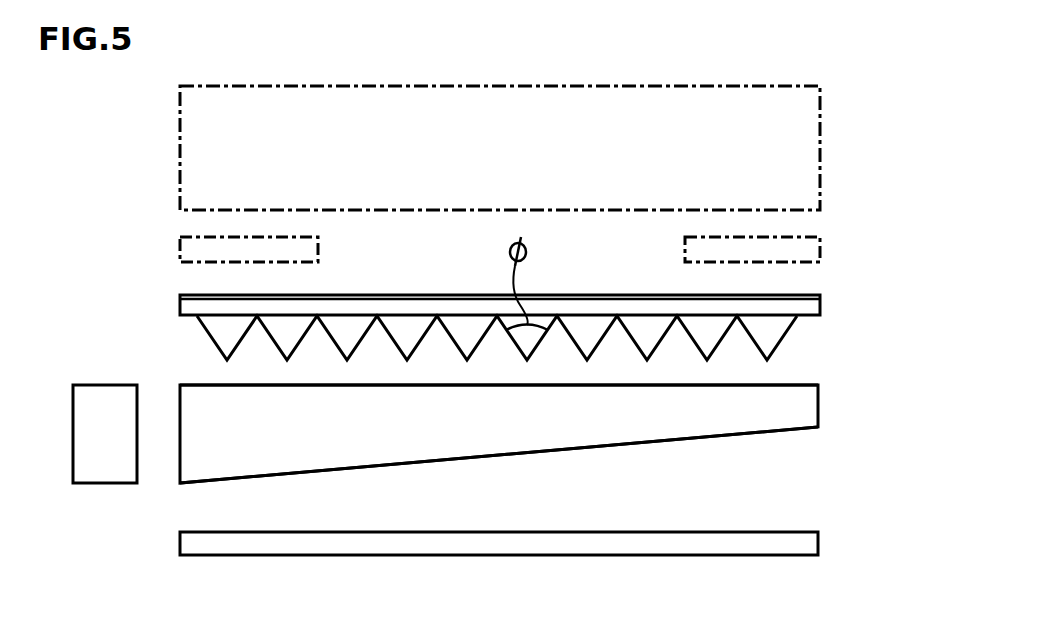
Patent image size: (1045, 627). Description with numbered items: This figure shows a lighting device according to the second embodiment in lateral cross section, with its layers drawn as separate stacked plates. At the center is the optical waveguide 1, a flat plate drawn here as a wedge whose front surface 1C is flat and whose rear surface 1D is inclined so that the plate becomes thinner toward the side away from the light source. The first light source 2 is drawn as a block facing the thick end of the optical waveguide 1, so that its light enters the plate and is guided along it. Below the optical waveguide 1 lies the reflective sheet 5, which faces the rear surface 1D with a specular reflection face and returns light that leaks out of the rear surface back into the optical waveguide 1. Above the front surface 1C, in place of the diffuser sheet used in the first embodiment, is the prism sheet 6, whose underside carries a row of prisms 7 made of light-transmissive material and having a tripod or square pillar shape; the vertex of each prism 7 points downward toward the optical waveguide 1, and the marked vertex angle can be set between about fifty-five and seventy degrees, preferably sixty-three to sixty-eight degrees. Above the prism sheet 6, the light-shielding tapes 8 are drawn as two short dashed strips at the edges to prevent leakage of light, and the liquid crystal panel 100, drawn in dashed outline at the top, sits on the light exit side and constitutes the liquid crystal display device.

The liquid crystal panel 100 is at (820, 152).
The light-shielding tapes 8 is at (820, 243).
The prism sheet 6 is at (820, 305).
The prisms 7 is at (775, 338).
The first light source 2 is at (103, 385).
The optical waveguide 1 is at (820, 405).
The front surface 1C is at (205, 385).
The rear surface 1D is at (462, 458).
The reflective sheet 5 is at (820, 540).